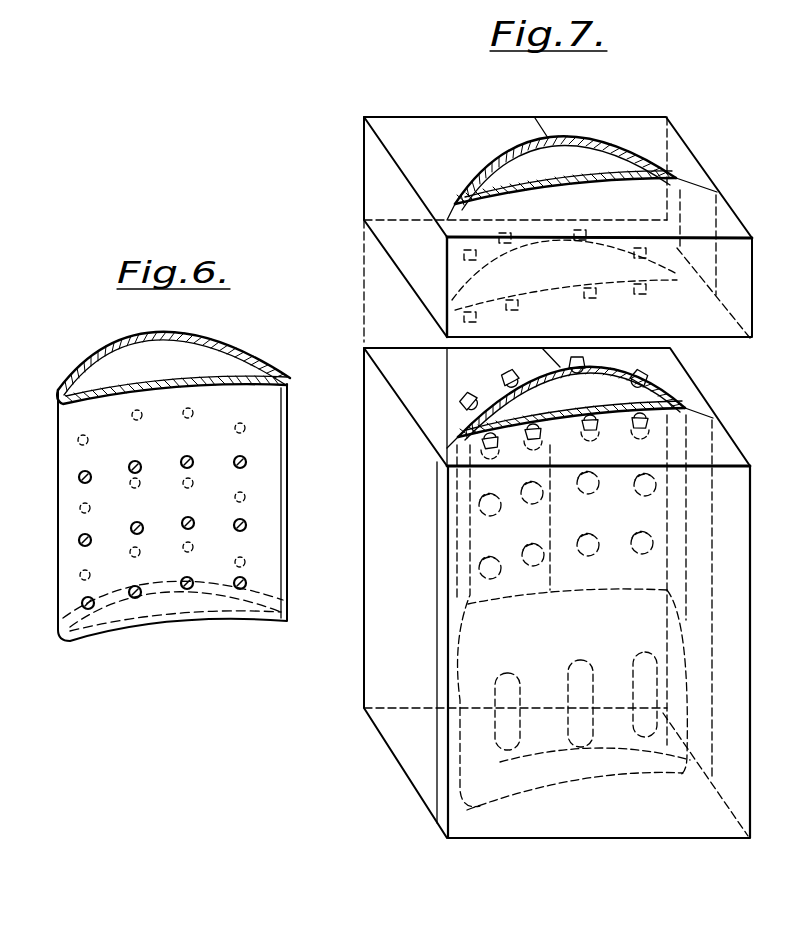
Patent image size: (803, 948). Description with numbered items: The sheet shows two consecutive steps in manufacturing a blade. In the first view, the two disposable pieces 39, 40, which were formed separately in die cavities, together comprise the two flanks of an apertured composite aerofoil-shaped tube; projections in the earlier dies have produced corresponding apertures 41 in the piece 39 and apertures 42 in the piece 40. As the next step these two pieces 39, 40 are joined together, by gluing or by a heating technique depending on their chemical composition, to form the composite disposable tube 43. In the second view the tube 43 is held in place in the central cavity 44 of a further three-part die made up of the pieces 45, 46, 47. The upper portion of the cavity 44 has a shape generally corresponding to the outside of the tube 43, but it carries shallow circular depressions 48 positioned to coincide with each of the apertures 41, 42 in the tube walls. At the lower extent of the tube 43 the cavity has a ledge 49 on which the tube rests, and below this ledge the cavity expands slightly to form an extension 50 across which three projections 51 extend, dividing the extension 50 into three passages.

In FIG. 6, the disposable piece 39 is at (96, 351).
In FIG. 6, the disposable piece 40 is at (95, 392).
In FIG. 6, the apertures 41 is at (92, 503).
In FIG. 6, the apertures 42 is at (247, 524).
In FIG. 6, the composite disposable tube 43 is at (312, 352).
In FIG. 7, the composite disposable tube 43 is at (604, 147).
In FIG. 7, the central cavity 44 is at (641, 155).
In FIG. 7, the die piece 45 is at (550, 833).
In FIG. 7, the die piece 46 is at (392, 732).
In FIG. 7, the die piece 47 is at (677, 372).
In FIG. 7, the shallow circular depressions 48 is at (648, 430).
In FIG. 7, the ledge 49 is at (520, 606).
In FIG. 7, the extension 50 is at (473, 680).
In FIG. 7, the projections 51 is at (630, 739).